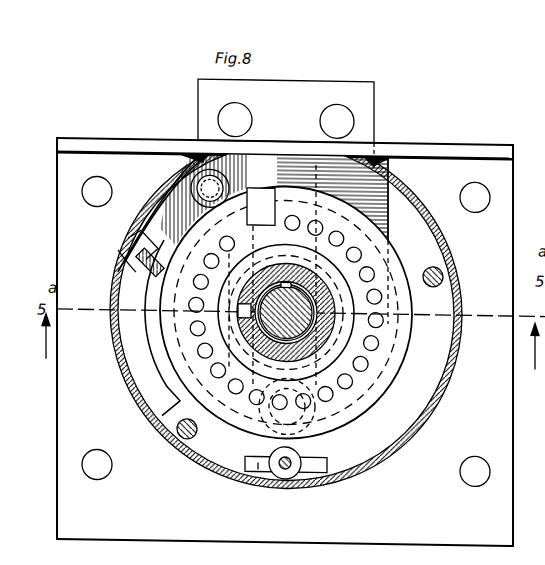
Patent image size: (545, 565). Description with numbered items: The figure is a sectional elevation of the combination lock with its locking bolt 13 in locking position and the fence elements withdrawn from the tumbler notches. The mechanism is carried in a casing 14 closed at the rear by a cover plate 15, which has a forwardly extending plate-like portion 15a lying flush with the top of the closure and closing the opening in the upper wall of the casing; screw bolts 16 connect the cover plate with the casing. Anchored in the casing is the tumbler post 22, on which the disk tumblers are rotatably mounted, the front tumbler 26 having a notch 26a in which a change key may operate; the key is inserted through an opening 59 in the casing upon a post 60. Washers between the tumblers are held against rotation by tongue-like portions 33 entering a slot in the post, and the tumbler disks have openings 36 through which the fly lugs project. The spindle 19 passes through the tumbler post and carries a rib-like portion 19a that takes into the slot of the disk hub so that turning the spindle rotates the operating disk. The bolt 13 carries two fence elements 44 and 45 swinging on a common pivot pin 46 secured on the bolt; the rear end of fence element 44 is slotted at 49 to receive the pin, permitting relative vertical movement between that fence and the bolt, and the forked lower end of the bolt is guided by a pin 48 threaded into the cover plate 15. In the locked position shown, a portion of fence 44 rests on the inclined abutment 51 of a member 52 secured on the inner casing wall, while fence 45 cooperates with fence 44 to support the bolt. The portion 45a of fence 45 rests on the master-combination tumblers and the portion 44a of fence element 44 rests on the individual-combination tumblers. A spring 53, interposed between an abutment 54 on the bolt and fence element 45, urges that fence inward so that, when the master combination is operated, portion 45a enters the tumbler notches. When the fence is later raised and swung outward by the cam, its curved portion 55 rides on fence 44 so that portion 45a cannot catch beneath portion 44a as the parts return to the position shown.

The locking bolt 13 is at (367, 92).
The casing 14 is at (430, 385).
The rear cover plate 15 is at (514, 402).
The plate-like portion 15a is at (424, 131).
The screw bolts 16 is at (445, 266).
The hub 19 is at (310, 327).
The rib-like portion 19a is at (300, 277).
The tumbler post 22 is at (300, 327).
The front tumbler 26 is at (428, 298).
The notch 26a is at (292, 185).
The tongue-like portions 33 is at (190, 320).
The openings 36 is at (193, 322).
The fence element 44 is at (133, 228).
The portion of fence element 44a is at (117, 258).
The fence element 45 is at (152, 184).
The portion of fence 45a is at (157, 210).
The pivot pin 46 is at (240, 183).
The pin 48 is at (330, 428).
The slot 49 is at (261, 206).
The inclined abutment 51 is at (145, 247).
The member 52 is at (127, 322).
The spring 53 is at (195, 165).
The abutment 54 is at (250, 158).
The curved portion 55 is at (157, 197).
The opening 59 is at (257, 468).
The post 60 is at (285, 465).